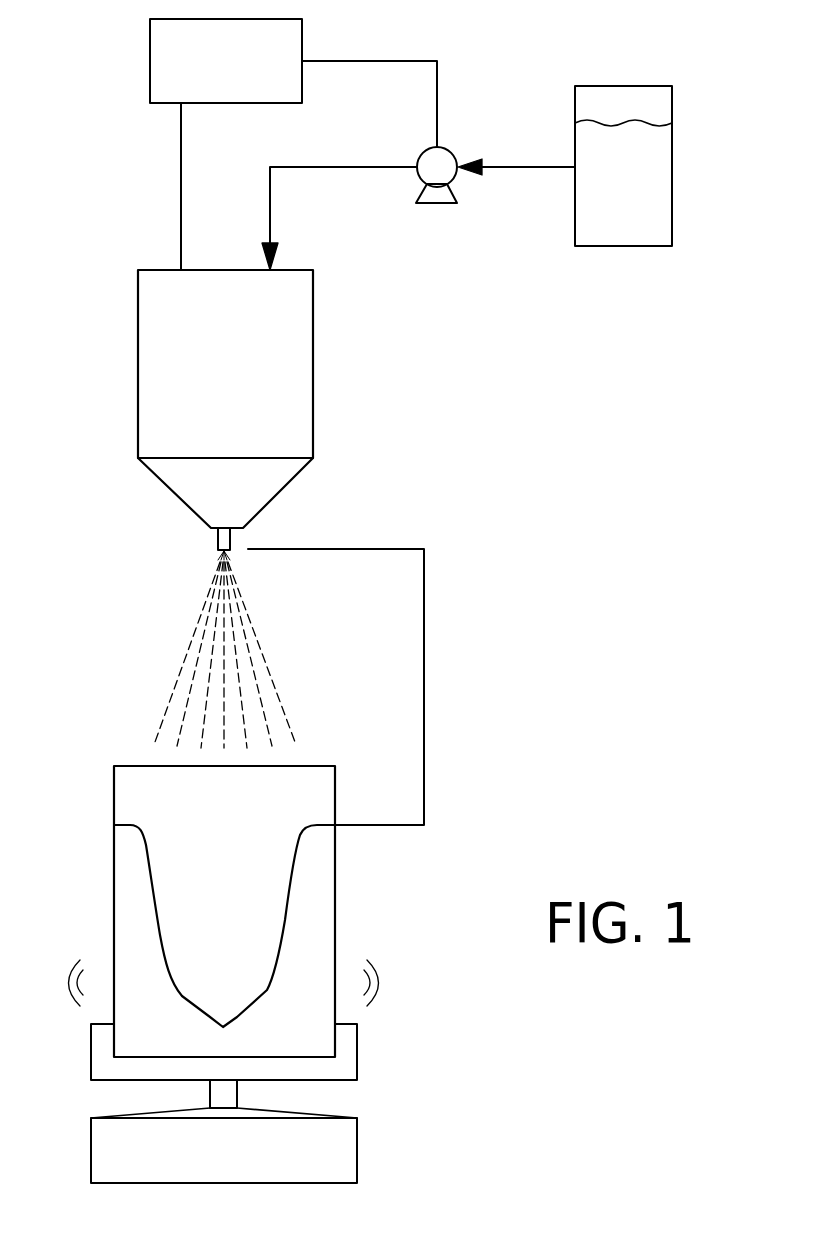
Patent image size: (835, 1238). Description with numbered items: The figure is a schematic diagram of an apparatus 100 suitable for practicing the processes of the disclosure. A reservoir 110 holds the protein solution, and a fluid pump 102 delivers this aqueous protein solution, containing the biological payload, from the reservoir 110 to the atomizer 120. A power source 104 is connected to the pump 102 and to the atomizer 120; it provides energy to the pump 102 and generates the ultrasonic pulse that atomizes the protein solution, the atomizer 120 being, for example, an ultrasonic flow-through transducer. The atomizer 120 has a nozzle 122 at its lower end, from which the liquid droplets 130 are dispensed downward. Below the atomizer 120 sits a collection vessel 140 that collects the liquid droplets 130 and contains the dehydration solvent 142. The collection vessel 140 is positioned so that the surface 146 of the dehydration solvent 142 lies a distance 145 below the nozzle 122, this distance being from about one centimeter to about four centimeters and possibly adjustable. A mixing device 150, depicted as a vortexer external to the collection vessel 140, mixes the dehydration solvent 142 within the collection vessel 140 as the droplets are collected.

The apparatus 100 is at (625, 407).
The fluid pump 102 is at (451, 152).
The power source 104 is at (243, 73).
The reservoir 110 is at (672, 170).
The atomizer 120 is at (313, 345).
The nozzle 122 is at (217, 540).
The liquid droplets 130 is at (173, 640).
The collection vessel 140 is at (114, 912).
The dehydration solvent 142 is at (308, 925).
The distance 145 is at (369, 687).
The surface 146 is at (148, 843).
The mixing device 150 is at (357, 1155).